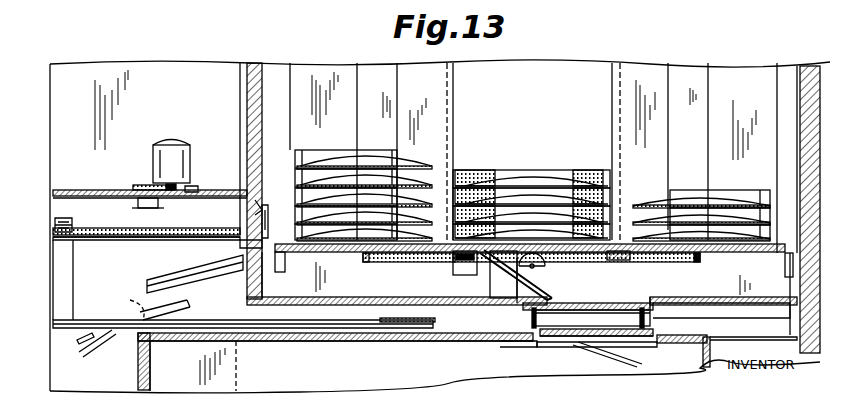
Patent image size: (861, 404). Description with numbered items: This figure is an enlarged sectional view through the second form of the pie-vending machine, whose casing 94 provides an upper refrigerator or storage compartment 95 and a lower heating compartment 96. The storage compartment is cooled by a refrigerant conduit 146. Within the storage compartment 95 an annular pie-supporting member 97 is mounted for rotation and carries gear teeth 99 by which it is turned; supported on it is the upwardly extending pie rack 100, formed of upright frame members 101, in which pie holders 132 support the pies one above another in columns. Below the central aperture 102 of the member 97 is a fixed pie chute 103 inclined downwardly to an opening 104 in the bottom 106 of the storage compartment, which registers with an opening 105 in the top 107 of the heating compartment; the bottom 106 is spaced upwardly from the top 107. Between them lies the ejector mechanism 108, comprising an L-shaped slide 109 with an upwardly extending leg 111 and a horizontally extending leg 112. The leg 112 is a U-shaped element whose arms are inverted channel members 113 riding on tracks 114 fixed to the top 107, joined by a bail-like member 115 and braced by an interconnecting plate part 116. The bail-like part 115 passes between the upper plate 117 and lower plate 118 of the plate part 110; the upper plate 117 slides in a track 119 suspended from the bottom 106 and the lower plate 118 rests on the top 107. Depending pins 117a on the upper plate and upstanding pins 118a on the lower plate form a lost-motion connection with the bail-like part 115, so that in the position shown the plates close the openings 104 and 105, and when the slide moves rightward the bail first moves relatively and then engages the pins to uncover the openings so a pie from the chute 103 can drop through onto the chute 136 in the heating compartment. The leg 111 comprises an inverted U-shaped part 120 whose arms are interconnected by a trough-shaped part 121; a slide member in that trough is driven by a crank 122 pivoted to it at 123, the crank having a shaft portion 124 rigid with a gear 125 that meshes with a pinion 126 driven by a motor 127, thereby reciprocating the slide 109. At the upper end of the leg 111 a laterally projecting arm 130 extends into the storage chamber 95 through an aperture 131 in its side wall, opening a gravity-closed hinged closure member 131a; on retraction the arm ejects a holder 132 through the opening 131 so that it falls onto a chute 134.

The casing 94 is at (821, 67).
The storage compartment 95 is at (573, 89).
The heating compartment 96 is at (329, 376).
The annular pie-supporting member 97 is at (755, 258).
The gear teeth 99 is at (366, 259).
The pie rack 100 is at (456, 108).
The frame members 101 is at (346, 80).
The central aperture 102 is at (606, 263).
The pie chute 103 is at (498, 274).
The opening 104 is at (606, 302).
The opening 105 is at (547, 344).
The bottom of the storage compartment 106 is at (312, 292).
The top of the heating compartment 107 is at (195, 321).
The ejector mechanism 108 is at (107, 190).
The slide 109 is at (115, 336).
The plate part 110 is at (570, 299).
The upwardly extending leg 111 is at (68, 273).
The horizontally extending leg 112 is at (86, 336).
The inverted channel members 113 is at (143, 311).
The tracks 114 is at (303, 331).
The bail-like member 115 is at (455, 327).
The interconnecting plate part 116 is at (395, 318).
The upper plate 117 is at (587, 302).
The depending pins 117a is at (640, 316).
The lower plate 118 is at (568, 346).
The pins 118a is at (655, 327).
The track 119 is at (689, 303).
The inverted U-shaped part 120 is at (72, 287).
The trough-shaped part 121 is at (78, 239).
The crank 122 is at (121, 190).
The pivot 123 is at (69, 217).
The shaft portion 124 is at (159, 208).
The gear 125 is at (152, 186).
The pinion 126 is at (176, 188).
The motor 127 is at (181, 152).
The arm 130 is at (196, 232).
The aperture 131 is at (255, 244).
The closure member 131a is at (271, 230).
The pie holders 132 is at (400, 168).
The chute 134 is at (176, 278).
The chute 136 is at (637, 366).
The refrigerant conduit 146 is at (244, 87).